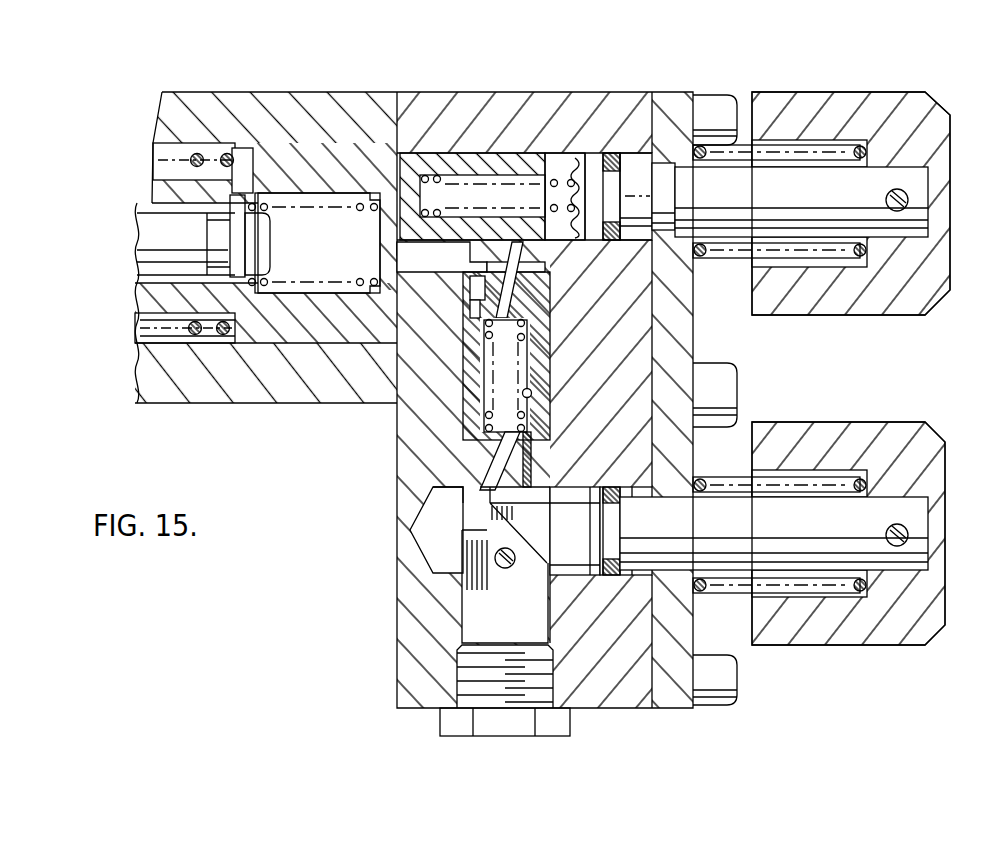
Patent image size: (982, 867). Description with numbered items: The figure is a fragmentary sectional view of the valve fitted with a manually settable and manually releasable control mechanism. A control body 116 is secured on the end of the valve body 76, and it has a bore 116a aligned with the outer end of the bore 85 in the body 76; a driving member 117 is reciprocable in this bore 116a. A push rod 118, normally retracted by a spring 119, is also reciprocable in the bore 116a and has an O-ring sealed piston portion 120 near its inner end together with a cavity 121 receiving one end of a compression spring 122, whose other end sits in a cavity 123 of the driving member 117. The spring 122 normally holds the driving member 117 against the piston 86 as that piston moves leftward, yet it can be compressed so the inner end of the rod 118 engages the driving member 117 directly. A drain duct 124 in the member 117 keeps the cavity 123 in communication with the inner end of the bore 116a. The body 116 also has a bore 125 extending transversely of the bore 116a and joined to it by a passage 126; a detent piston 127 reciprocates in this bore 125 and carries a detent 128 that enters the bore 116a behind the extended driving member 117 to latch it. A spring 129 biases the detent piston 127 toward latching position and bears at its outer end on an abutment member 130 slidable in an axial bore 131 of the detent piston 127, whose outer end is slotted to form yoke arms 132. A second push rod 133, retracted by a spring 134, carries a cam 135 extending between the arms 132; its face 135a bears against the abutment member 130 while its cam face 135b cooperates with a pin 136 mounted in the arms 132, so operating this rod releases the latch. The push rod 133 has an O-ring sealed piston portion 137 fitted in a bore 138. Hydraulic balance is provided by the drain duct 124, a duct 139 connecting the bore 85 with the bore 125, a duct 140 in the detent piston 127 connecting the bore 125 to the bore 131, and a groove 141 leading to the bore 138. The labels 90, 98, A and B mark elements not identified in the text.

The body 76 is at (240, 403).
The bore 85 is at (163, 333).
The piston 86 is at (303, 338).
The collar 90 is at (262, 292).
The seal ring 98 is at (190, 327).
The body 116 is at (400, 600).
The bore 116a is at (547, 244).
The driving member 117 is at (508, 178).
The push rod 118 is at (806, 201).
The spring 119 is at (772, 153).
The piston portion 120 is at (638, 168).
The cavity 121 is at (590, 163).
The compression spring 122 is at (452, 178).
The cavity 123 is at (563, 180).
The drain duct 124 is at (403, 213).
The bore 125 is at (545, 358).
The passage 126 is at (545, 270).
The detent piston 127 is at (480, 302).
The detent 128 is at (490, 278).
The spring 129 is at (490, 388).
The abutment member 130 is at (533, 455).
The axial bore 131 is at (531, 393).
The yoke arms 132 is at (503, 585).
The push rod 133 is at (805, 524).
The spring 134 is at (813, 588).
The cam 135 is at (557, 545).
The cam face 135a is at (553, 495).
The cam face 135b is at (433, 493).
The pin 136 is at (467, 555).
The piston portion 137 is at (652, 580).
The bore 138 is at (565, 565).
The duct 139 is at (407, 243).
The duct 140 is at (515, 300).
The groove 141 is at (493, 455).
The cylinder block A is at (860, 318).
The cylinder block B is at (865, 422).